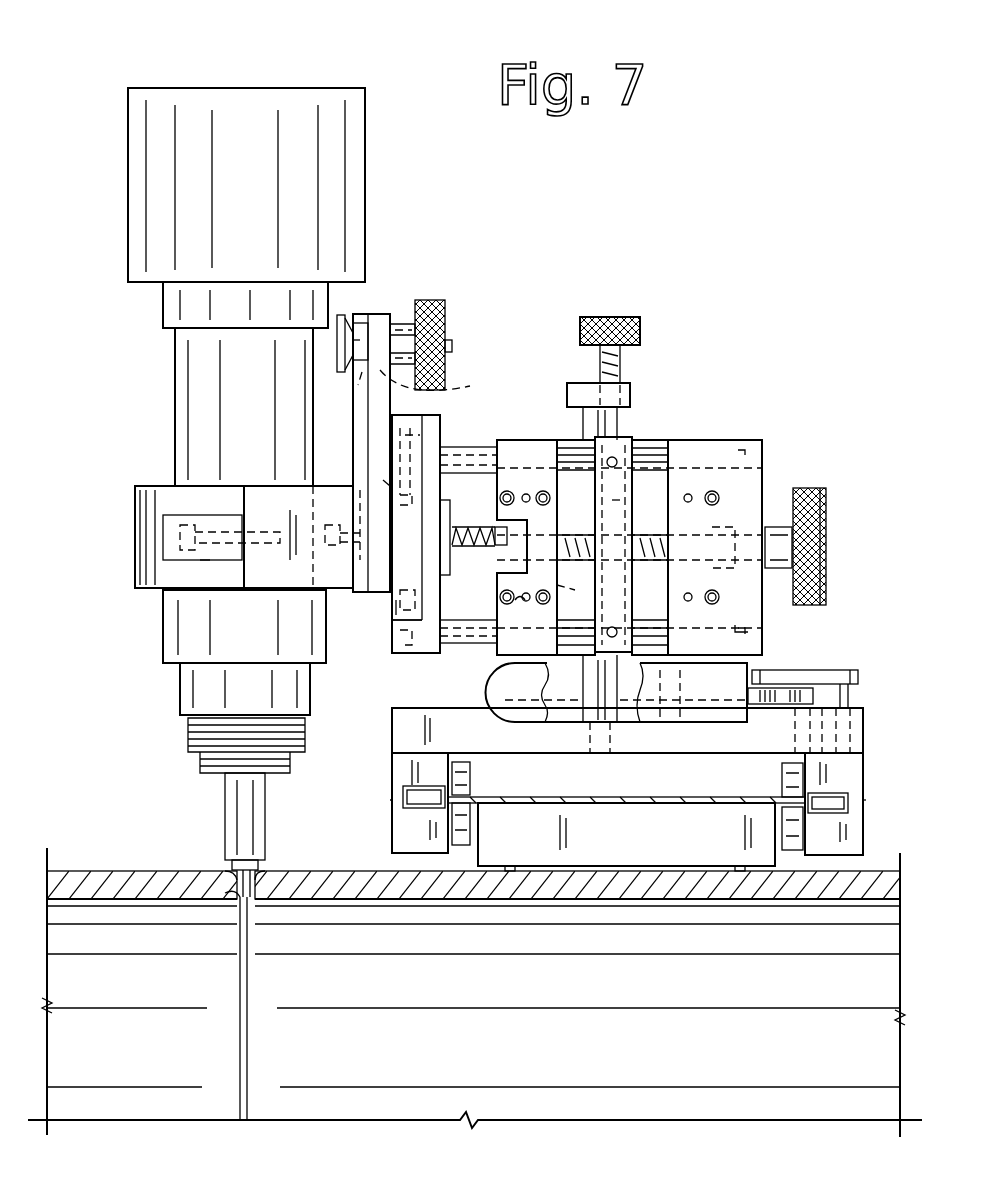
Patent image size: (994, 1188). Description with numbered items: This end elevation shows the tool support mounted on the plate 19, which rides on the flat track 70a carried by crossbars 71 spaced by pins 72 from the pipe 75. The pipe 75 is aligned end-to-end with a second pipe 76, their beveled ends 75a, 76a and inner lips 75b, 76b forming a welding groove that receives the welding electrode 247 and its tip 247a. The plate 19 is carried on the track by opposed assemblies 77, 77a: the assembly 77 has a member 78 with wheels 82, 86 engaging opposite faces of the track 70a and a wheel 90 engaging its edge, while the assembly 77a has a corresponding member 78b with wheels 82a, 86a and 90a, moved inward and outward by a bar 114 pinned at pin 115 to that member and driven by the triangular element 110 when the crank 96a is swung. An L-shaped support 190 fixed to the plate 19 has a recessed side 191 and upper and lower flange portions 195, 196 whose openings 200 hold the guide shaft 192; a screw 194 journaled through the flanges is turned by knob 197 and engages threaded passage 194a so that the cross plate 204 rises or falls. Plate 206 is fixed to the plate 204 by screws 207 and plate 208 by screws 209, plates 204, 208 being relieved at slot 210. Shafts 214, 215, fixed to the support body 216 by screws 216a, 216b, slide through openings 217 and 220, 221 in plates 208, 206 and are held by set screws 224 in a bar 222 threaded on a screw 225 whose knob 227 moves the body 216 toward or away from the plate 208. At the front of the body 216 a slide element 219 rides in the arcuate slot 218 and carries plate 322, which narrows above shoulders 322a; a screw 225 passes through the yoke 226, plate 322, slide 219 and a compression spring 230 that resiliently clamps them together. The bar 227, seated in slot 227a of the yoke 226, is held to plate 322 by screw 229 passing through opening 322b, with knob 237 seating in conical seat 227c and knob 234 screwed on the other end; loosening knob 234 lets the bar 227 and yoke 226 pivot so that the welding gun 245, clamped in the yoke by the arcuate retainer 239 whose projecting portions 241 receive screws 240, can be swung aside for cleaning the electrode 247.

The welding gun or head 245 is at (150, 383).
The retainer 239 is at (135, 529).
The projecting portions 241 is at (160, 518).
The screws 240 is at (203, 560).
The yoke 226 is at (260, 486).
The bar 227 is at (353, 432).
The slot 227a is at (362, 468).
The conical seat 227c is at (355, 340).
The screw 229 is at (268, 384).
The plate 322 is at (375, 313).
The shoulders 322a is at (383, 482).
The cylindrical opening 322b is at (436, 380).
The knob 237 is at (346, 318).
The knob 234 is at (440, 296).
The support body 216 is at (418, 653).
The screw 216a is at (415, 425).
The screw 216b is at (400, 642).
The slide element 219 is at (395, 606).
The arcuate slot 218 is at (400, 618).
The shaft 214 is at (456, 446).
The shaft 215 is at (470, 644).
The helical compression spring 230 is at (465, 548).
The screw 225 is at (470, 526).
The plate 208 is at (532, 438).
The screws 209 is at (542, 490).
The opening 217 is at (556, 456).
The recessed side 191 is at (612, 430).
The set screws 224 is at (620, 458).
The shaft 192 is at (650, 430).
The opening 220 is at (740, 445).
The plate 206 is at (762, 480).
The screws 207 is at (720, 498).
The opening 221 is at (752, 632).
The openings 200 is at (618, 500).
The bar 222 is at (630, 536).
The slot 210 is at (500, 578).
The threaded passage 194a is at (557, 585).
The cross plate 204 is at (666, 608).
The support 190 is at (567, 392).
The upper flange portion 195 is at (632, 392).
The screw 194 is at (620, 362).
The knob 197 is at (641, 328).
The lower flange portion 196 is at (617, 722).
The crank 96a is at (568, 722).
The plate 19 is at (864, 730).
The bar 114 is at (815, 670).
The triangularly shaped element 110 is at (813, 692).
The pin 115 is at (850, 700).
The member 78 is at (392, 772).
The wheel 82 is at (471, 772).
The wheel 86 is at (471, 826).
The wheel 90 is at (405, 806).
The assembly 77 is at (382, 800).
The straight or flat track 70a is at (655, 796).
The crossbars 71 is at (630, 840).
The wheel 82a is at (781, 778).
The wheel 86a is at (781, 826).
The right side block 78b is at (863, 773).
The wheel 90a is at (848, 806).
The assembly 77a is at (878, 796).
The pins 72 is at (512, 872).
The second pipe 76 is at (116, 871).
The pipe 75 is at (318, 871).
The angularly formed pipe end 76a is at (232, 872).
The angularly formed pipe end 75a is at (258, 872).
The left plate joint edge 76b is at (238, 900).
The inner lip 75b is at (249, 905).
The welding electrode 247 is at (252, 898).
The weld bead 247a is at (235, 895).